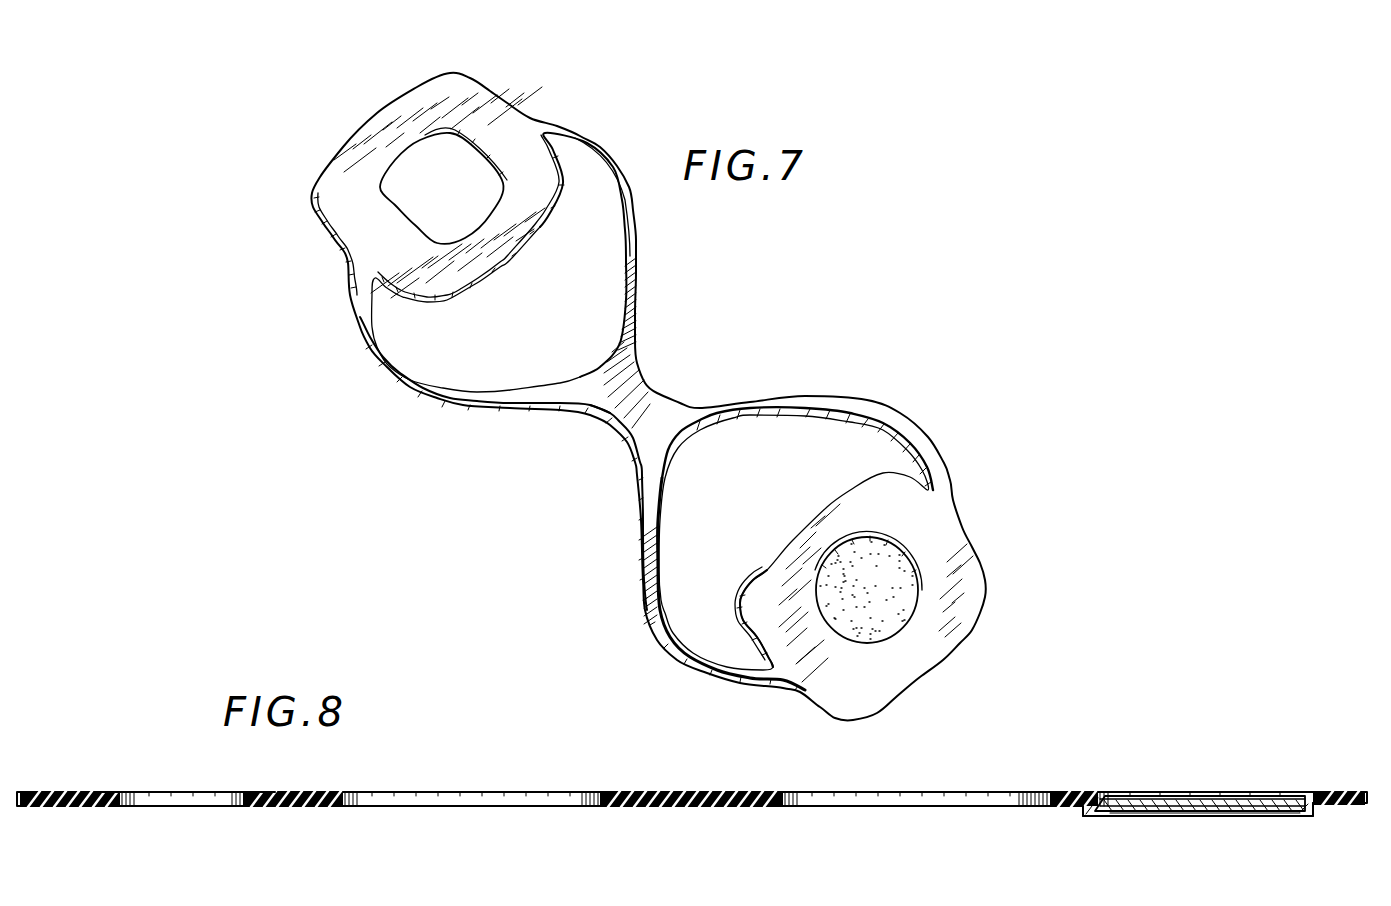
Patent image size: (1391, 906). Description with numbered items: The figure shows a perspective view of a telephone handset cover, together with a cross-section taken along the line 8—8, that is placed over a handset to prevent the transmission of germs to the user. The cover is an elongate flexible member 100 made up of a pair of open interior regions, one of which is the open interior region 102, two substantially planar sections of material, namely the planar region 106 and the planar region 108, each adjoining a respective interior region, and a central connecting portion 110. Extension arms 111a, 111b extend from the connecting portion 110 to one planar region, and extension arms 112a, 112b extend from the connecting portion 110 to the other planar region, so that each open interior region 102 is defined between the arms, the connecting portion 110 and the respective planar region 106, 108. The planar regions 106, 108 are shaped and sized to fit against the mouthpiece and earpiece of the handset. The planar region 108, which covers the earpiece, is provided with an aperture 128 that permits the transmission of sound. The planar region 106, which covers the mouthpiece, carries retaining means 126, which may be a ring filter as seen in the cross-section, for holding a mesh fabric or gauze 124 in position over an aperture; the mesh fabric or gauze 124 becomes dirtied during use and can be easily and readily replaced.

In FIG. 7, the elongate flexible member 100 is at (657, 330).
In FIG. 8, the elongate flexible member 100 is at (424, 790).
In FIG. 7, the open interior region 102 is at (575, 281).
In FIG. 7, the planar region 106 is at (927, 527).
In FIG. 7, the planar region 108 is at (522, 154).
In FIG. 8, the planar region 108 is at (268, 798).
In FIG. 7, the connecting portion 110 is at (663, 427).
In FIG. 8, the connecting portion 110 is at (720, 800).
In FIG. 7, the extension arm 111a is at (635, 212).
In FIG. 8, the extension arm 111a is at (452, 804).
In FIG. 7, the extension arm 111b is at (449, 393).
In FIG. 7, the extension arm 112a is at (940, 462).
In FIG. 8, the extension arm 112a is at (927, 805).
In FIG. 7, the extension arm 112b is at (657, 615).
In FIG. 7, the mesh fabric or gauze 124 is at (881, 591).
In FIG. 8, the mesh fabric or gauze 124 is at (1225, 799).
In FIG. 8, the retaining means 126 is at (1113, 820).
In FIG. 7, the aperture 128 is at (464, 173).
In FIG. 7, the section line 8- 8 is at (368, 112).